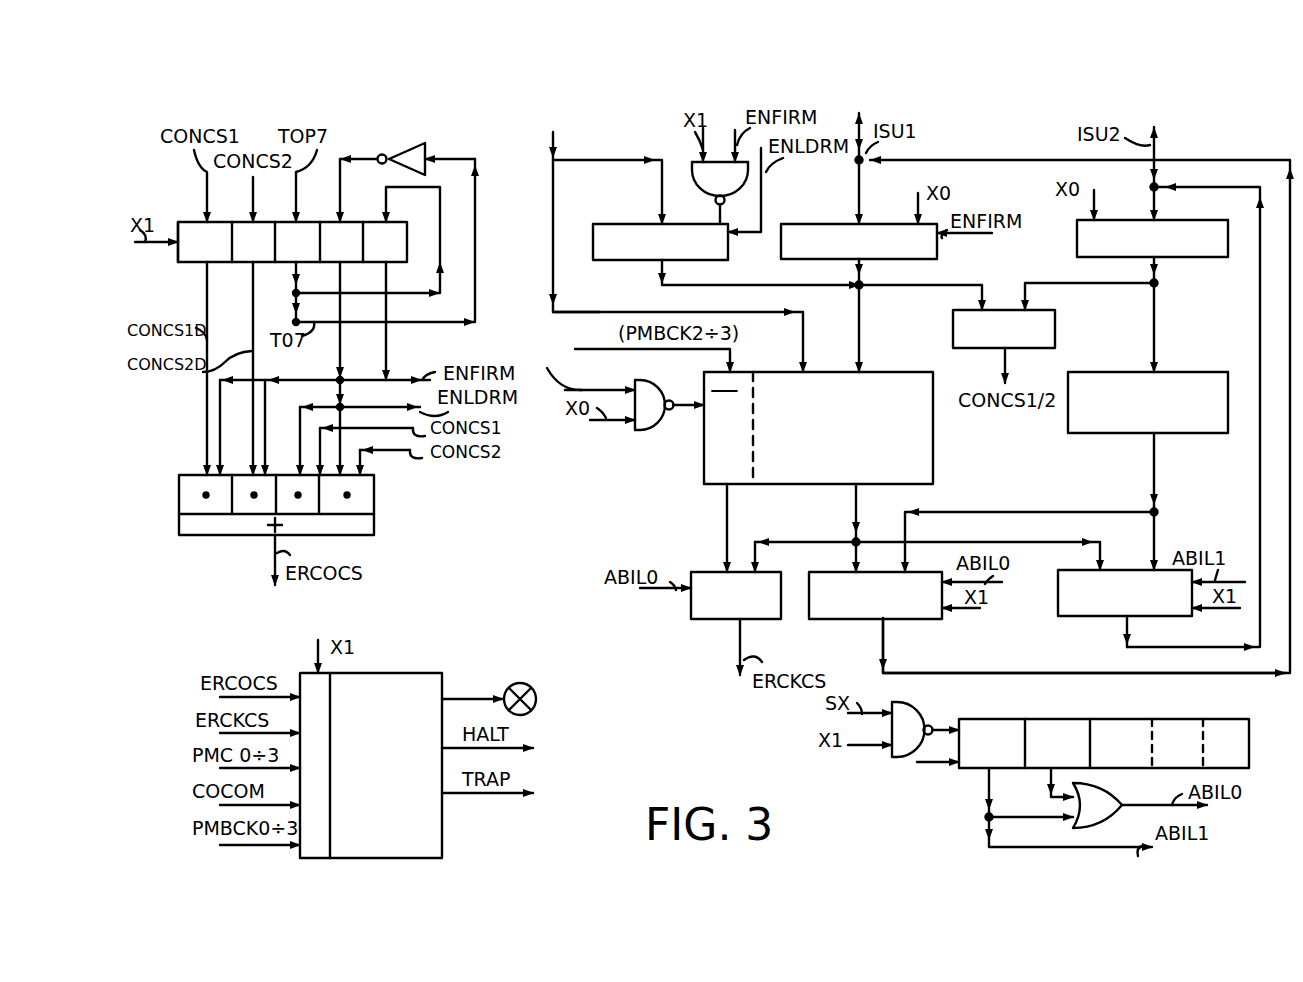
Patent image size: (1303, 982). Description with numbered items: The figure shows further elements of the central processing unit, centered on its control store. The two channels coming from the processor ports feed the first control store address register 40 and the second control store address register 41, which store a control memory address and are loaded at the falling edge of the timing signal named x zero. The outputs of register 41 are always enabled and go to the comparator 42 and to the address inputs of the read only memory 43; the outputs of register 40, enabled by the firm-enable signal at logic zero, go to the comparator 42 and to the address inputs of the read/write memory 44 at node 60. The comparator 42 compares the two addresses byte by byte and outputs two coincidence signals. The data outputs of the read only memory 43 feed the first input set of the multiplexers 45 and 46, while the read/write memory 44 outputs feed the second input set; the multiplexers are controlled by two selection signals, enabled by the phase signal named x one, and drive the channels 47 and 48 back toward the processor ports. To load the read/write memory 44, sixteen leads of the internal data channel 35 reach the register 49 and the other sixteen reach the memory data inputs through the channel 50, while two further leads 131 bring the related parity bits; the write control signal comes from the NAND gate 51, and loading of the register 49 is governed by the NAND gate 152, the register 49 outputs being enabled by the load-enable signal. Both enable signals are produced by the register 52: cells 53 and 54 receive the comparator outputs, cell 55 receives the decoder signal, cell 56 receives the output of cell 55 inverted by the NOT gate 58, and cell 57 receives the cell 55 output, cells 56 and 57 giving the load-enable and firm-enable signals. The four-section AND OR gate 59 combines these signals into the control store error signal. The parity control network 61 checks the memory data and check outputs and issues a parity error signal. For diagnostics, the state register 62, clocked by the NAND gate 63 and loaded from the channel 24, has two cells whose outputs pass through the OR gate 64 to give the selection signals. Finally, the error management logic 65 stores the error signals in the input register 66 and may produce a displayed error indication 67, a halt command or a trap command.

The channel 24 is at (932, 763).
The internal data channel 35 is at (553, 132).
The register CSAREG 1 40 is at (822, 222).
The register CSAREG 2 41 is at (1198, 220).
The comparator 42 is at (1056, 330).
The read only memory 43 is at (1206, 372).
The read/write memory RAM 44 is at (934, 452).
The multiplexer 45 is at (858, 622).
The multiplexer 46 is at (1092, 620).
The channel 47 is at (1011, 673).
The channel 48 is at (1255, 293).
The register 49 is at (618, 224).
The channel 50 is at (568, 312).
The NAND gate 51 is at (650, 432).
The register 52 is at (282, 250).
The cell 53 is at (198, 224).
The cell 54 is at (241, 224).
The cell 55 is at (286, 224).
The cell 56 is at (331, 224).
The cell 57 is at (381, 224).
The NOT gate 58 is at (428, 157).
The AND OR gate 59 is at (375, 510).
The node 60 is at (857, 290).
The parity control network 61 is at (700, 622).
The state register 62 is at (1200, 721).
The NAND gate 63 is at (922, 705).
The OR gate 64 is at (1113, 799).
The error management logic 65 is at (367, 747).
The input register 66 is at (300, 684).
The displayed error indication 67 is at (530, 684).
The line PMBCK2-3 131 is at (608, 350).
The NAND gate 152 is at (693, 188).